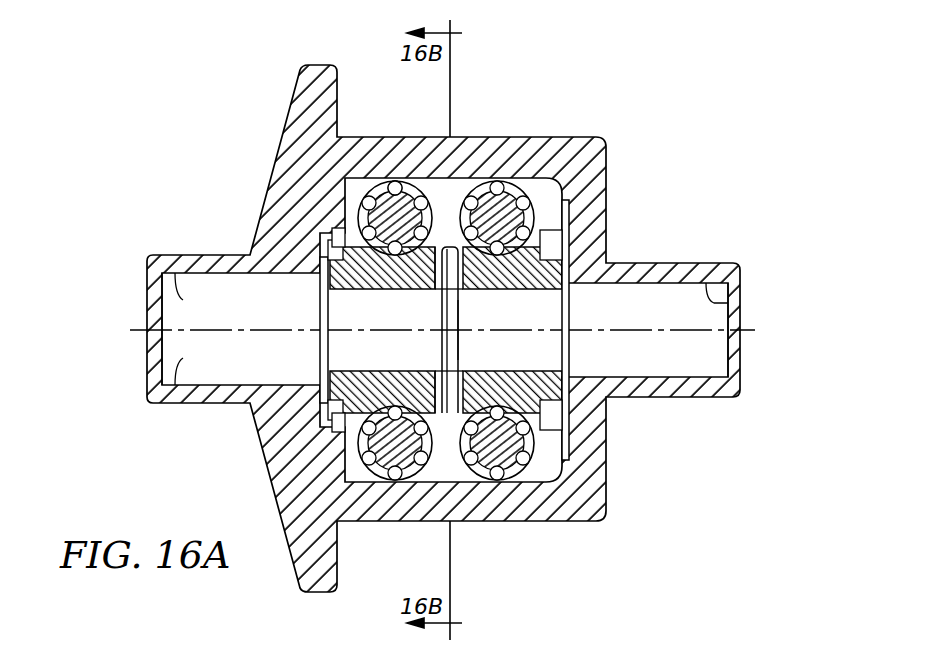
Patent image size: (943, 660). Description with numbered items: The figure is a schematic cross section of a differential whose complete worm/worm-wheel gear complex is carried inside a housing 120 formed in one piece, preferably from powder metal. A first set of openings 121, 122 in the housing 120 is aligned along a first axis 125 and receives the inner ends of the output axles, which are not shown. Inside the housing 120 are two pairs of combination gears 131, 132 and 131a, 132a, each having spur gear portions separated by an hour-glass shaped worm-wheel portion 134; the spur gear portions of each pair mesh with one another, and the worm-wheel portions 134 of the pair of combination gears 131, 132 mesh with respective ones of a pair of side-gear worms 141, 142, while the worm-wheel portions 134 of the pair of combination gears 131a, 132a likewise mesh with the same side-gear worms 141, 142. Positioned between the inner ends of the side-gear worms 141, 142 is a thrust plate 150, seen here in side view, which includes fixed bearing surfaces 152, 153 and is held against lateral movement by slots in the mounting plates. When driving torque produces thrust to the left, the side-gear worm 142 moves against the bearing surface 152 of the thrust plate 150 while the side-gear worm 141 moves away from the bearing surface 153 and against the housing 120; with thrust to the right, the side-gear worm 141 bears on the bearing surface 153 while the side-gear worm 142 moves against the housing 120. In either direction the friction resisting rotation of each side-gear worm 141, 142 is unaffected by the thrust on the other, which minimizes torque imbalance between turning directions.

The housing 120 is at (277, 183).
The opening 121 is at (170, 297).
The opening 122 is at (740, 305).
The first axis 125 is at (747, 332).
The combination gear 131 is at (362, 212).
The combination gear 131a is at (352, 467).
The combination gear 132 is at (490, 188).
The combination gear 132a is at (466, 465).
The worm-wheel portion 134 is at (400, 183).
The side-gear worm 141 is at (340, 304).
The side-gear worm 142 is at (563, 301).
The thrust plate 150 is at (456, 322).
The bearing surface 152 is at (460, 367).
The bearing surface 153 is at (428, 284).